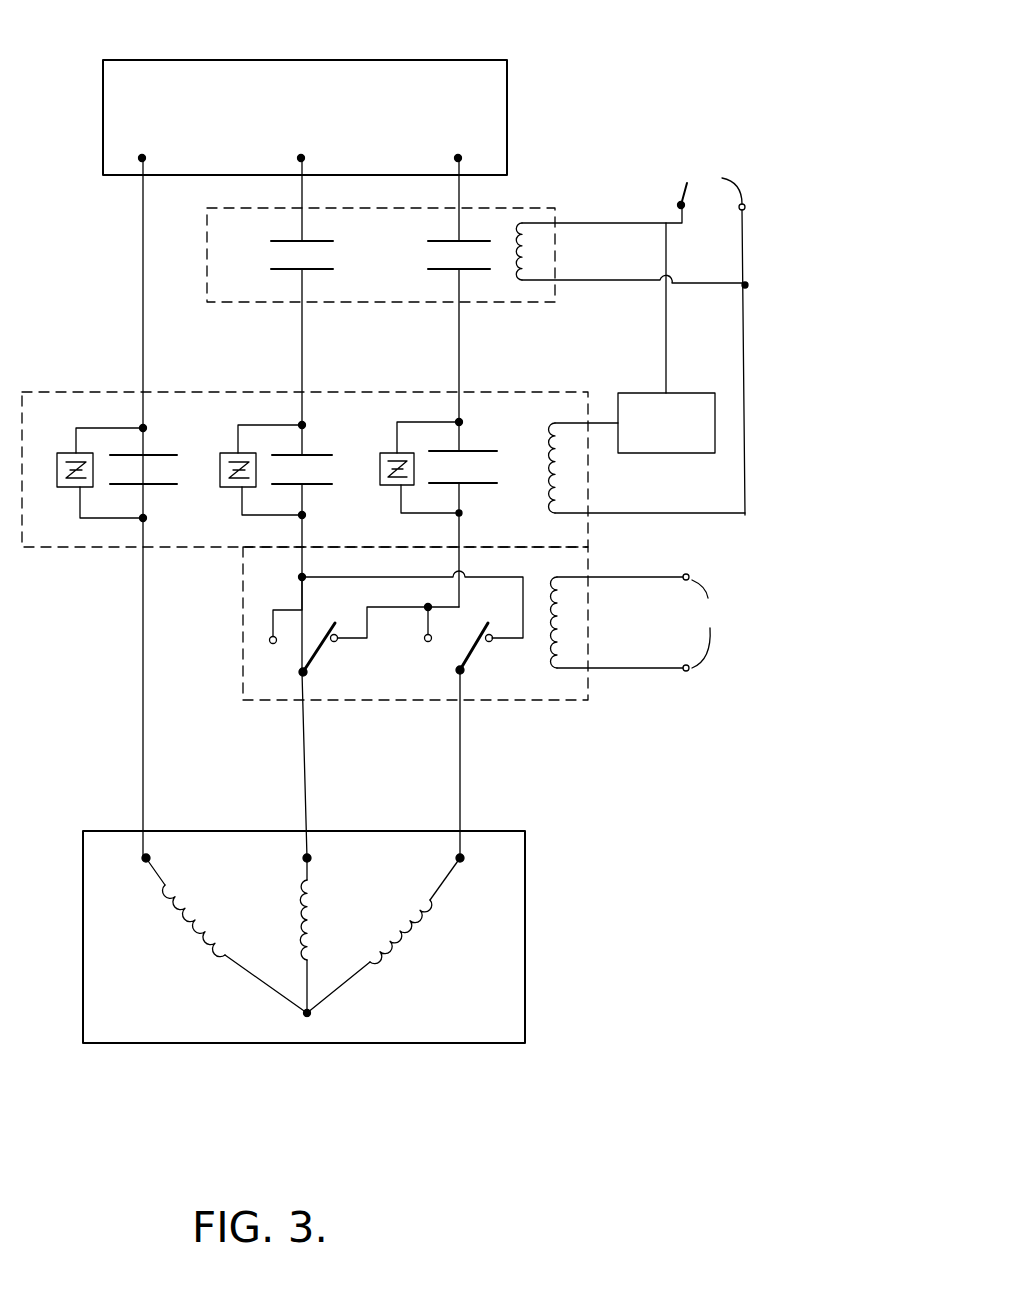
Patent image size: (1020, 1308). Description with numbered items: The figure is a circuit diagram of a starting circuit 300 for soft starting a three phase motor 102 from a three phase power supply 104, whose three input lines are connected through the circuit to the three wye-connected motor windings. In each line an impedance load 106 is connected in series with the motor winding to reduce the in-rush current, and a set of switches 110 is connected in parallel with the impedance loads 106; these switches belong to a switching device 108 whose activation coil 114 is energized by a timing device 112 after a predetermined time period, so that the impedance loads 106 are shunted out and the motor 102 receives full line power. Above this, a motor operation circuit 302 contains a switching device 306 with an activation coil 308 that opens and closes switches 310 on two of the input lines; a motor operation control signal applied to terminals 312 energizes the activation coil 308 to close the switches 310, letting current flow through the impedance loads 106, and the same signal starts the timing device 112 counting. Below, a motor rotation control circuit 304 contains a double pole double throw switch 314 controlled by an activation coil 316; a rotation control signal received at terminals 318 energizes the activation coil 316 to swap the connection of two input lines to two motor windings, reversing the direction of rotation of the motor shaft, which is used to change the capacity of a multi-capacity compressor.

The motor 102 is at (525, 905).
The three phase power supply 104 is at (507, 60).
The impedance load 106 is at (72, 490).
The switching device 108 is at (118, 392).
The switches 110 is at (163, 448).
The timing device 112 is at (715, 420).
The activation coil 114 is at (565, 478).
The starting circuit 300 is at (612, 752).
The motor operation circuit 302 is at (247, 331).
The motor rotation control circuit 304 is at (274, 733).
The switching device 306 is at (213, 213).
The activation coil 308 is at (522, 280).
The switches 310 is at (445, 272).
The terminals 312 is at (710, 336).
The DPDT switch 314 is at (458, 660).
The activation coil 316 is at (557, 630).
The terminals 318 is at (712, 622).